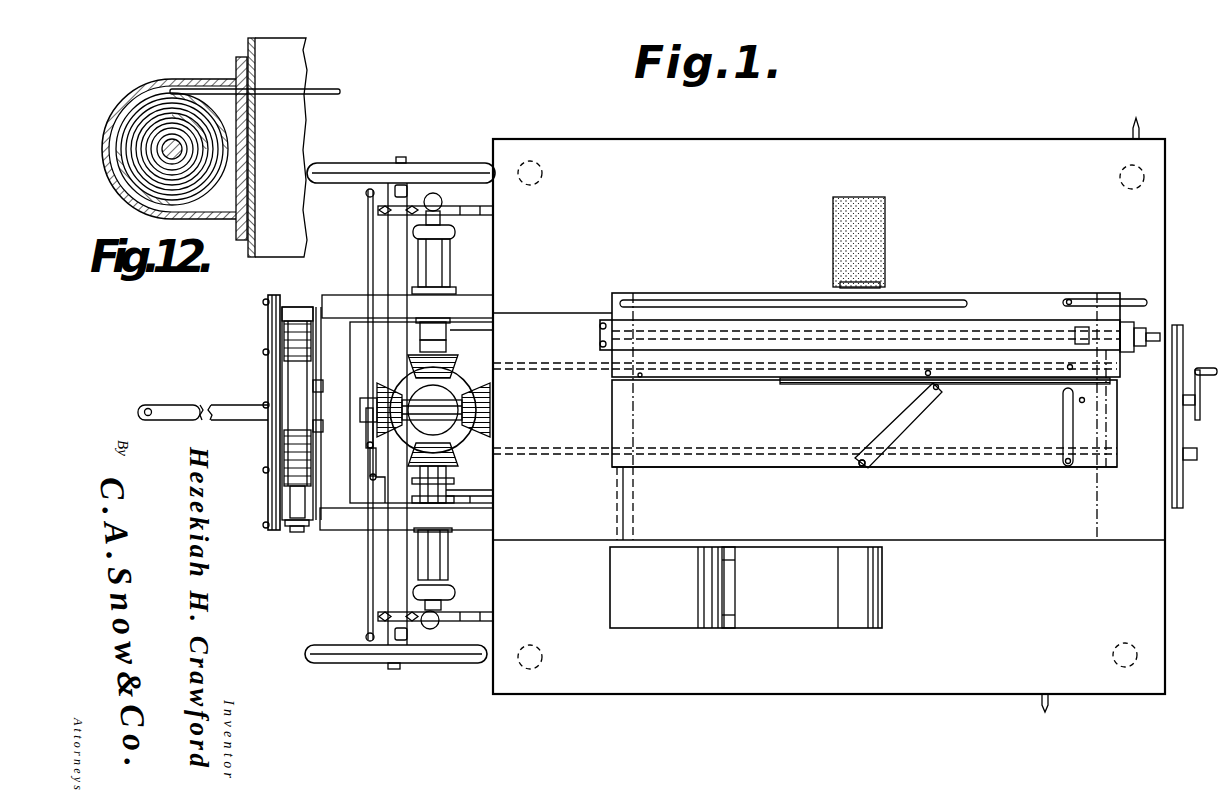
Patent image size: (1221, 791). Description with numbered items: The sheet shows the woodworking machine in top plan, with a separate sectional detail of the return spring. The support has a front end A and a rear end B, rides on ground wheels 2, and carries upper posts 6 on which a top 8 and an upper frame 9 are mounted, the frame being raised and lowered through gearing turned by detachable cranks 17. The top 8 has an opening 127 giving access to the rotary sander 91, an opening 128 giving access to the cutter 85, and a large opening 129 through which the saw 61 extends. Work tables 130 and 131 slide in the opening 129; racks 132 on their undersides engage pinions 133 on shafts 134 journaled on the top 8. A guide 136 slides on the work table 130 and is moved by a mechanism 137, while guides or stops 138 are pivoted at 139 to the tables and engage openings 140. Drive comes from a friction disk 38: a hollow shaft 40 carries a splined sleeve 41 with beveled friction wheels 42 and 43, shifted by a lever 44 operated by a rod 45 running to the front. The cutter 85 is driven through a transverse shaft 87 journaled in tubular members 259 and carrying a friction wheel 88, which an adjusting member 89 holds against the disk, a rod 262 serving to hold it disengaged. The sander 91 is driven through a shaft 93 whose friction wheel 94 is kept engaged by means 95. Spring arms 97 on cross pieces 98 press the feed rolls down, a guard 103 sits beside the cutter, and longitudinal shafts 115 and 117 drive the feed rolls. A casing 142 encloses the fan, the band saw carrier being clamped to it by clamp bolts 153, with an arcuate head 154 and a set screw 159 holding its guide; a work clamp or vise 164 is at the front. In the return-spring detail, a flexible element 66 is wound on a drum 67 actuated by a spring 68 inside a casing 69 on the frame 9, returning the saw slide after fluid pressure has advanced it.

In FIG. 12, the casing 69 is at (128, 108).
In FIG. 12, the spring 68 is at (152, 176).
In FIG. 12, the drum 67 is at (196, 188).
In FIG. 12, the flexible element 66 is at (320, 91).
In FIG. 12, the upper frame 9 is at (285, 132).
In FIG. 1, the upper frame 9 is at (340, 522).
In FIG. 1, the top 8 is at (988, 160).
In FIG. 1, the front end A is at (1170, 252).
In FIG. 1, the rear end B is at (261, 446).
In FIG. 1, the upper posts 6 is at (543, 173).
In FIG. 1, the detachable cranks 17 is at (1136, 118).
In FIG. 1, the rotary sander 91 is at (885, 214).
In FIG. 1, the opening 127 is at (888, 284).
In FIG. 1, the work table 130 is at (1045, 310).
In FIG. 1, the guide 136 is at (990, 320).
In FIG. 1, the mechanism 137 is at (1145, 328).
In FIG. 1, the pinions 133 is at (640, 382).
In FIG. 1, the racks 132 is at (630, 420).
In FIG. 1, the shafts 134 is at (566, 362).
In FIG. 1, the saw 61 is at (820, 386).
In FIG. 1, the openings 140 is at (915, 395).
In FIG. 1, the guides or stops 138 is at (945, 390).
In FIG. 1, the pivot 139 is at (864, 466).
In FIG. 1, the work table 131 is at (938, 466).
In FIG. 1, the opening 129 is at (625, 512).
In FIG. 1, the rod 45 is at (1177, 510).
In FIG. 1, the work clamp or vise 164 is at (1180, 462).
In FIG. 1, the opening 128 is at (785, 632).
In FIG. 1, the spring arms 97 is at (722, 556).
In FIG. 1, the cross pieces 98 is at (706, 590).
In FIG. 1, the guard 103 is at (799, 587).
In FIG. 1, the cutter 85 is at (875, 598).
In FIG. 1, the ground wheels 2 is at (438, 170).
In FIG. 1, the means for maintaining friction wheel engaged 95 is at (442, 202).
In FIG. 1, the shaft 93 is at (440, 322).
In FIG. 1, the friction wheel 94 is at (450, 340).
In FIG. 1, the longitudinal shaft 115 is at (490, 333).
In FIG. 1, the friction disk 38 is at (400, 378).
In FIG. 1, the sleeve 41 is at (440, 400).
In FIG. 1, the hollow shaft 40 is at (358, 410).
In FIG. 1, the beveled friction wheel 42 is at (475, 410).
In FIG. 1, the beveled friction wheel 43 is at (367, 446).
In FIG. 1, the lever 44 is at (370, 470).
In FIG. 1, the friction wheel 88 is at (450, 460).
In FIG. 1, the transverse shaft 87 is at (470, 490).
In FIG. 1, the longitudinal shaft 117 is at (470, 498).
In FIG. 1, the tubular members 259 is at (430, 545).
In FIG. 1, the adjusting member 89 is at (450, 592).
In FIG. 1, the rod 262 is at (428, 630).
In FIG. 1, the casing 142 is at (270, 335).
In FIG. 1, the arcuate head 154 is at (296, 330).
In FIG. 1, the clamp bolts 153 is at (318, 345).
In FIG. 1, the set screw 159 is at (292, 532).